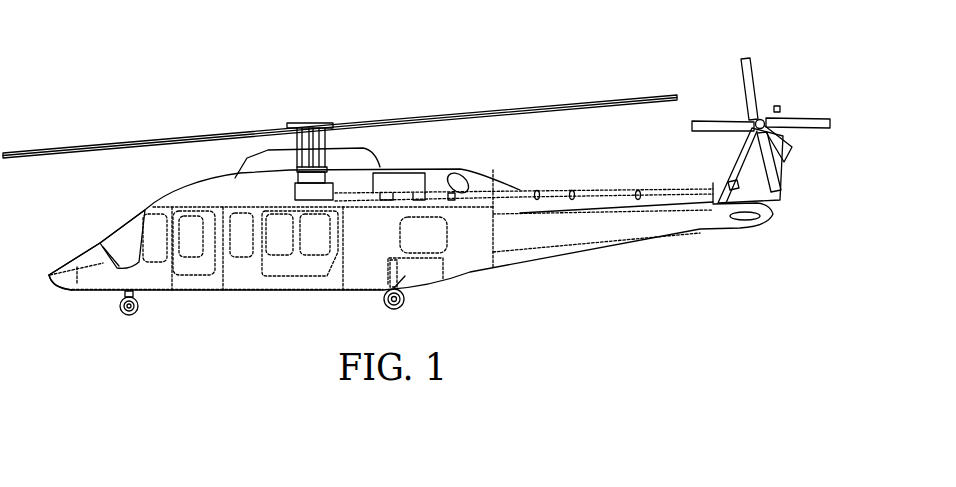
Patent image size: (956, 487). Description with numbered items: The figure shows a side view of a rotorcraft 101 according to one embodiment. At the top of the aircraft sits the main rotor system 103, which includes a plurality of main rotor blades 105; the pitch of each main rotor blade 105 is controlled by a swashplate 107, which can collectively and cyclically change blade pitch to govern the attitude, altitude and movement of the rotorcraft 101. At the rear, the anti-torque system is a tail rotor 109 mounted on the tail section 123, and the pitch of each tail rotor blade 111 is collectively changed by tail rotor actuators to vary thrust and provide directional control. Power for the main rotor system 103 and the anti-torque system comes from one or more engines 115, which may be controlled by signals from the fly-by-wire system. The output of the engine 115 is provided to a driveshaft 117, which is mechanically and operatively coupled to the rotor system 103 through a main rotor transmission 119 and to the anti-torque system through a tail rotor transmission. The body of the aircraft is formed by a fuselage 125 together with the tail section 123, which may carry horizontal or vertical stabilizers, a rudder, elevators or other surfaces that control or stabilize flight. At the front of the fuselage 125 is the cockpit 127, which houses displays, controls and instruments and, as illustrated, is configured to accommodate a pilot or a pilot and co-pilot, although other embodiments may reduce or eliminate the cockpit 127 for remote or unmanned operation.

The rotorcraft 101 is at (205, 66).
The main rotor system 103 is at (345, 98).
The main rotor blade 105 is at (140, 148).
The swashplate 107 is at (296, 167).
The tail rotor 109 is at (783, 98).
The tail rotor blade 111 is at (812, 130).
The engine 115 is at (398, 173).
The driveshaft 117 is at (353, 201).
The main rotor transmission 119 is at (290, 197).
The tail section 123 is at (630, 248).
The fuselage 125 is at (243, 293).
The cockpit 127 is at (110, 234).